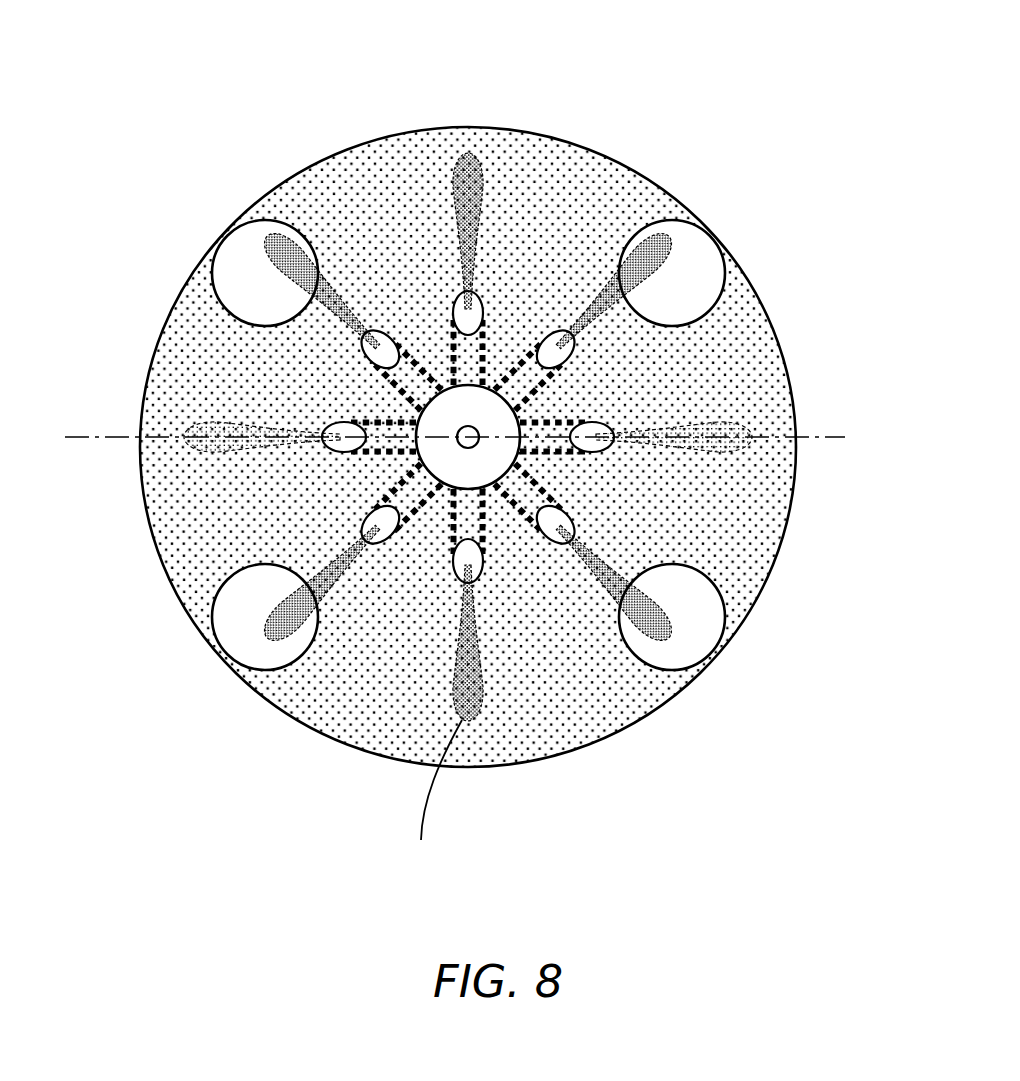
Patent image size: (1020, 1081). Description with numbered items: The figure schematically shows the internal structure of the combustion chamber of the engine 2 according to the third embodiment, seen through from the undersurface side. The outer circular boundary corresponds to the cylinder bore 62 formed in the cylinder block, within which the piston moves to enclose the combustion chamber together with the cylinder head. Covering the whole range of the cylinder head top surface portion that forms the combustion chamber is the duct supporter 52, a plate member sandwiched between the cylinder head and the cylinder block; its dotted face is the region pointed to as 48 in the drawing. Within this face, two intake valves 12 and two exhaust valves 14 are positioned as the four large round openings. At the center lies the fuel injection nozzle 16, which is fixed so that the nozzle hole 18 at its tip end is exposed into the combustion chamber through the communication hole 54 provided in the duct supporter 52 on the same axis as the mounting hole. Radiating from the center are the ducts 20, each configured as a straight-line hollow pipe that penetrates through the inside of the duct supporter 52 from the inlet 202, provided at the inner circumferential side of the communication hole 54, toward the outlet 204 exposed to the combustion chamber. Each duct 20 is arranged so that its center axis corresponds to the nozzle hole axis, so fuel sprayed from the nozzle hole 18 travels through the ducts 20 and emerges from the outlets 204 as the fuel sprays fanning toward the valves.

The engine 2 is at (461, 450).
The intake valves 12 is at (245, 263).
The exhaust valves 14 is at (697, 262).
The fuel injection nozzle 16 is at (462, 463).
The nozzle hole 18 is at (470, 434).
The duct 20 is at (560, 453).
The injector face 48 is at (498, 459).
The duct supporter 52 is at (498, 404).
The communication hole 54 is at (406, 609).
The cylinder bore 62 is at (530, 128).
The inlet 202 is at (522, 437).
The outlet 204 is at (593, 436).